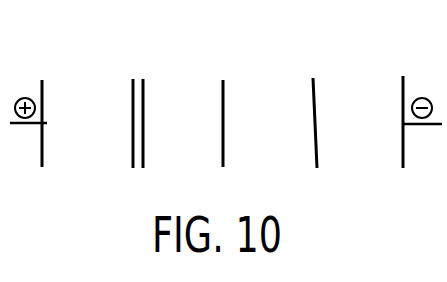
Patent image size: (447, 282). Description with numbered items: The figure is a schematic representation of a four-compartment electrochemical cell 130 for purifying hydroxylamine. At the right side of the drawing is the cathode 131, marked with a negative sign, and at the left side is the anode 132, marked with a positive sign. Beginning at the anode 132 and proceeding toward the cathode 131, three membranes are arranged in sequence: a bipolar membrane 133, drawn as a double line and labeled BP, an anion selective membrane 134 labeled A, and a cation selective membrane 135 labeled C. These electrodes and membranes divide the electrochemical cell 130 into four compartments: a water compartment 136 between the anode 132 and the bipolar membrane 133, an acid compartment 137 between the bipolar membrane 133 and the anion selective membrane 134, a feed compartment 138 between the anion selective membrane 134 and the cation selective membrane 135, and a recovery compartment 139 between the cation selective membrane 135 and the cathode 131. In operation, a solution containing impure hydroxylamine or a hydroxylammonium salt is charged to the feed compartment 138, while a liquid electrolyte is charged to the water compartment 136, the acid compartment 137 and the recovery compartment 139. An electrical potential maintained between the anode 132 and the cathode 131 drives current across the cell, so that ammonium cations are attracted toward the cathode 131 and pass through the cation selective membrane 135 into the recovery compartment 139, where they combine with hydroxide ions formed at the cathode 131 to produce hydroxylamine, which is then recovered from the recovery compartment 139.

The electrochemical cell 130 is at (226, 103).
The cathode 131 is at (415, 110).
The anode 132 is at (36, 110).
The bipolar membrane 133 is at (140, 110).
The anion selective membrane 134 is at (228, 110).
The cation selective membrane 135 is at (317, 110).
The water compartment 136 is at (97, 160).
The acid compartment 137 is at (189, 160).
The feed compartment 138 is at (275, 160).
The recovery compartment 139 is at (364, 160).